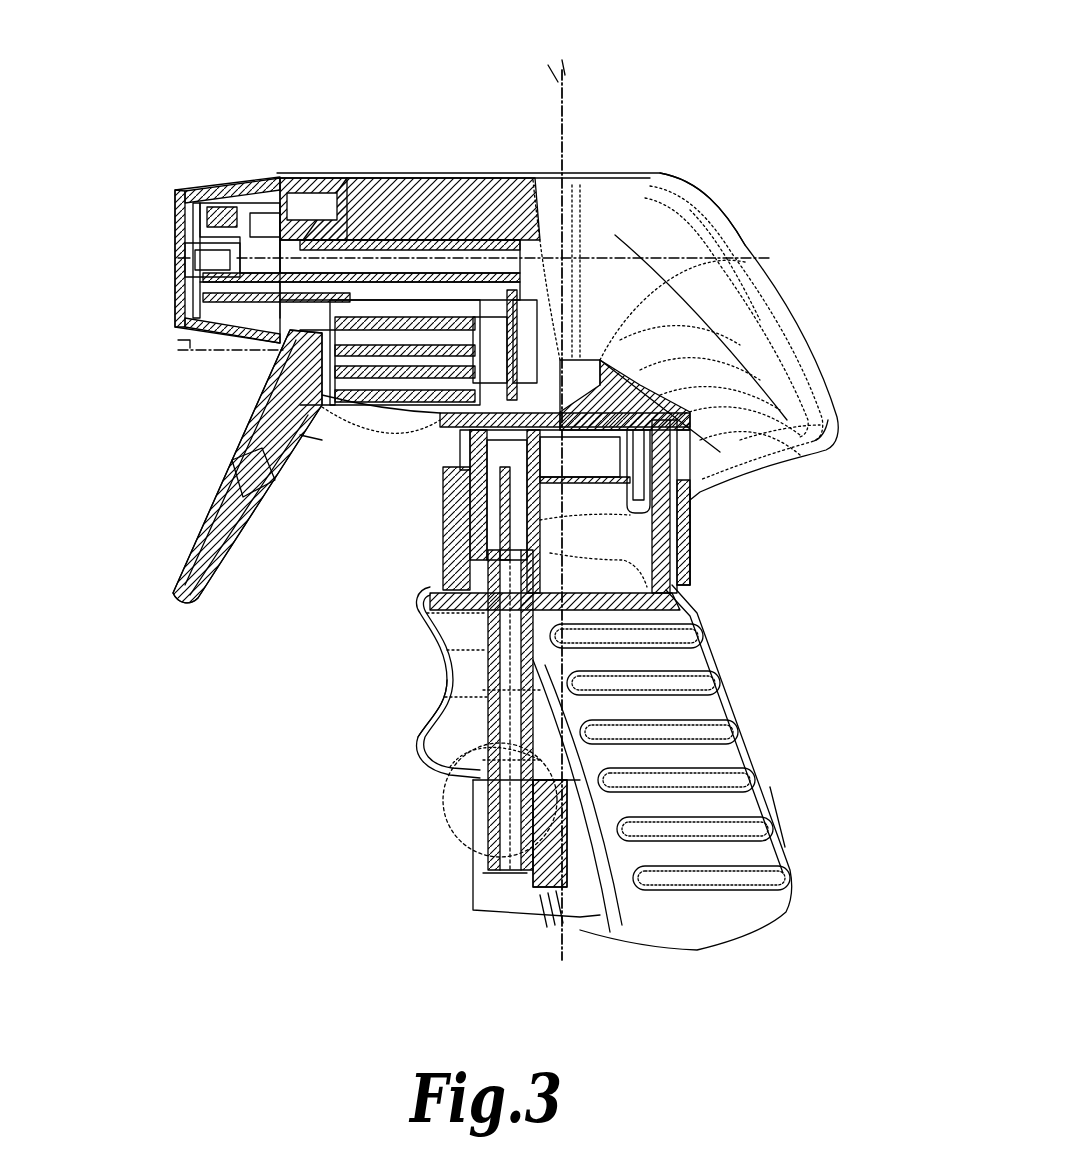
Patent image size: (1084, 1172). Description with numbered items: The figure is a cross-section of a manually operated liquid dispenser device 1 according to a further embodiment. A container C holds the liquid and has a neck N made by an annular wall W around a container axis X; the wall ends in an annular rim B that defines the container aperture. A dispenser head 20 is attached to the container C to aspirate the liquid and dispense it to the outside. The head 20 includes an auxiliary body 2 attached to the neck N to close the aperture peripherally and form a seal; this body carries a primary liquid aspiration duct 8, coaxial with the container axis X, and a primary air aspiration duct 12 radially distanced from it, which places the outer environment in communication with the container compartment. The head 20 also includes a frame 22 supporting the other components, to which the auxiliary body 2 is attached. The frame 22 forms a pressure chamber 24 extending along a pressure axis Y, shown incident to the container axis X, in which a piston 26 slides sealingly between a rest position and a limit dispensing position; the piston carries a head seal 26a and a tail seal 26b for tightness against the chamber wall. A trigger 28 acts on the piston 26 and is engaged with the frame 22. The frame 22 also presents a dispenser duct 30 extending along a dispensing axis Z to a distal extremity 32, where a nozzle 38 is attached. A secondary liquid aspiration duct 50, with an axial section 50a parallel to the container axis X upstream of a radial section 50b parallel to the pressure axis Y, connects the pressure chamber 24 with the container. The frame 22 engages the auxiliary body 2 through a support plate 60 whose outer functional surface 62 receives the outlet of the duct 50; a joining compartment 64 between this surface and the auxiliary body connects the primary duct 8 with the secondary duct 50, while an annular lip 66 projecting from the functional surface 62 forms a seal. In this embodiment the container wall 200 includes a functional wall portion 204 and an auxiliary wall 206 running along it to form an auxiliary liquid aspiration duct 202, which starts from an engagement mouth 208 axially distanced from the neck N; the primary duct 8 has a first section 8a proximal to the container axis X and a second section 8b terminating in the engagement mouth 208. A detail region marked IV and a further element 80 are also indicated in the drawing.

The dispenser device 1 is at (795, 118).
The auxiliary body 2 is at (680, 588).
The primary liquid aspiration duct 8 is at (432, 653).
The first section 8a is at (690, 520).
The second section 8b is at (420, 713).
The primary air aspiration duct 12 is at (432, 560).
The dispenser head 20 is at (287, 580).
The frame 22 is at (750, 345).
The pressure chamber 24 is at (537, 314).
The piston 26 is at (300, 435).
The head seal 26a is at (495, 270).
The tail seal 26b is at (437, 262).
The trigger 28 is at (240, 497).
The dispenser duct 30 is at (273, 177).
The distal extremity 32 is at (227, 180).
The nozzle 38 is at (178, 348).
The secondary liquid aspiration duct 50 is at (707, 200).
The axial section 50a is at (770, 280).
The radial section 50b is at (575, 300).
The support plate 60 is at (815, 375).
The functional surface 62 is at (832, 445).
The joining compartment 64 is at (443, 420).
The annular lip 66 is at (793, 423).
The valve 80 is at (327, 250).
The container wall 200 is at (763, 720).
The auxiliary liquid aspiration duct 202 is at (513, 887).
The functional wall portion 204 is at (473, 840).
The auxiliary wall 206 is at (547, 927).
The engagement mouth 208 is at (440, 760).
The annular rim B is at (700, 500).
The container C is at (777, 800).
The neck N is at (355, 453).
The annular wall W is at (690, 565).
The container axis X is at (551, 501).
The pressure axis Y is at (203, 362).
The dispensing axis Z is at (165, 250).
The detail IV is at (434, 830).